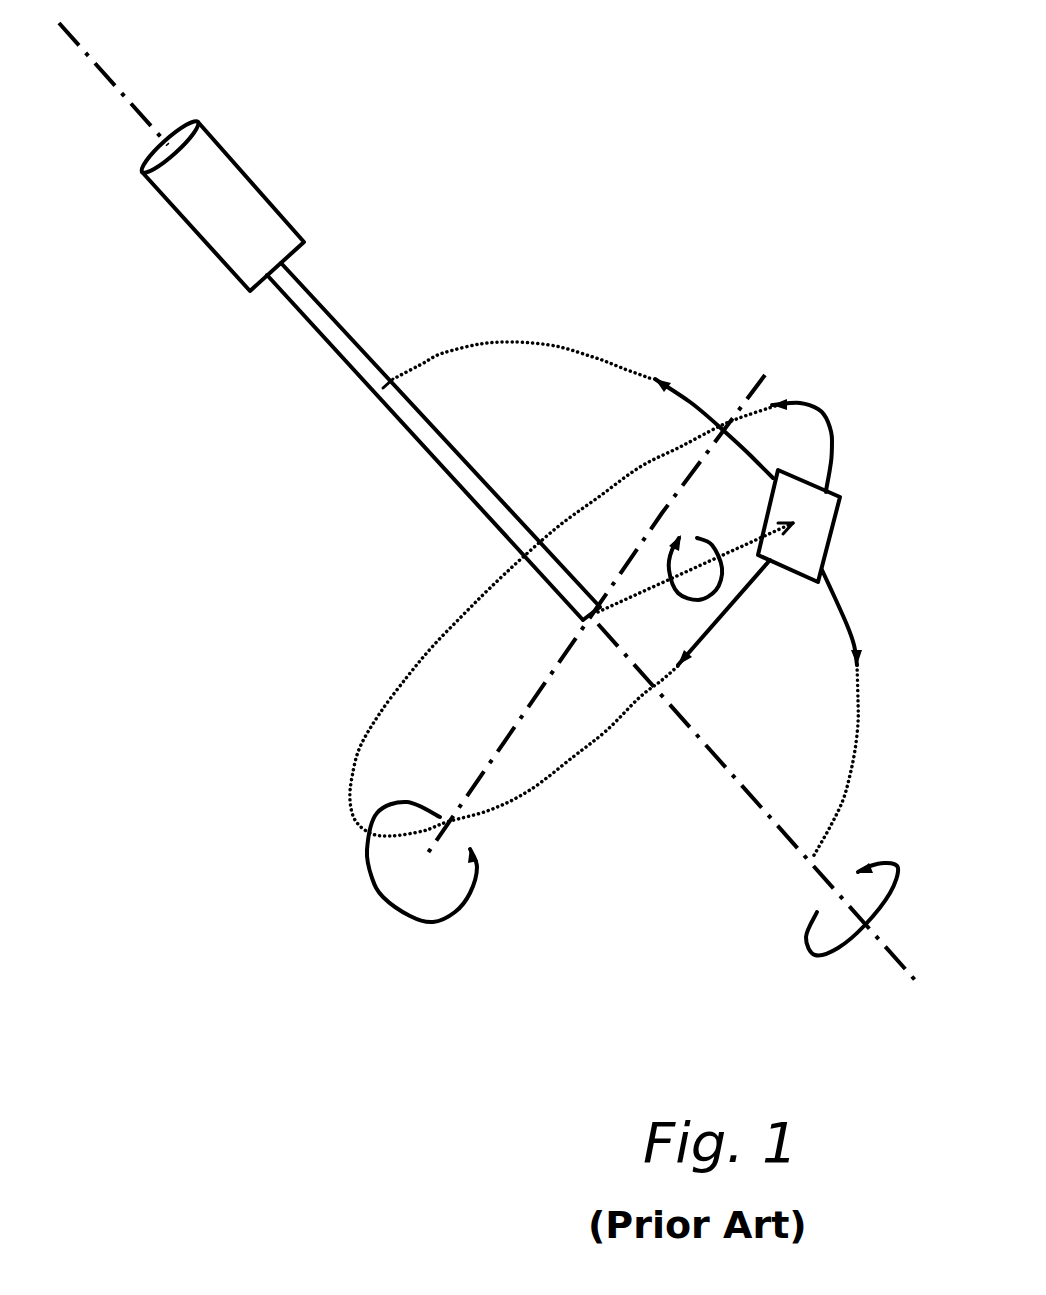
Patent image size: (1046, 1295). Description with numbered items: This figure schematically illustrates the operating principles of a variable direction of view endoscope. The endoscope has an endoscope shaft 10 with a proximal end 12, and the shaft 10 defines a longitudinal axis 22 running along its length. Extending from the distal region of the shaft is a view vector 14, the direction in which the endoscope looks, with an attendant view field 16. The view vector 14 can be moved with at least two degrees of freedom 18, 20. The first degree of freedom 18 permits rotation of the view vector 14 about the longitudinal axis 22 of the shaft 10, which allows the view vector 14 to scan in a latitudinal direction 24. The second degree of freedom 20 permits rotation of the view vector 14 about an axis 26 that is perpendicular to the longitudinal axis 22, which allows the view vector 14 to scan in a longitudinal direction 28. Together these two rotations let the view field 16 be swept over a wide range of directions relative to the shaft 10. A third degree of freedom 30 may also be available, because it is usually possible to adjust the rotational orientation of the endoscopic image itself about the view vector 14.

The endoscope shaft 10 is at (408, 424).
The proximal end 12 is at (255, 185).
The view vector 14 is at (624, 602).
The view field 16 is at (822, 523).
The first degree of freedom 18 is at (803, 930).
The second degree of freedom 20 is at (365, 862).
The longitudinal axis 22 is at (900, 970).
The latitudinal direction 24 is at (833, 443).
The axis perpendicular to the longitudinal axis 26 is at (533, 698).
The longitudinal direction 28 is at (670, 396).
The third degree of freedom 30 is at (717, 593).